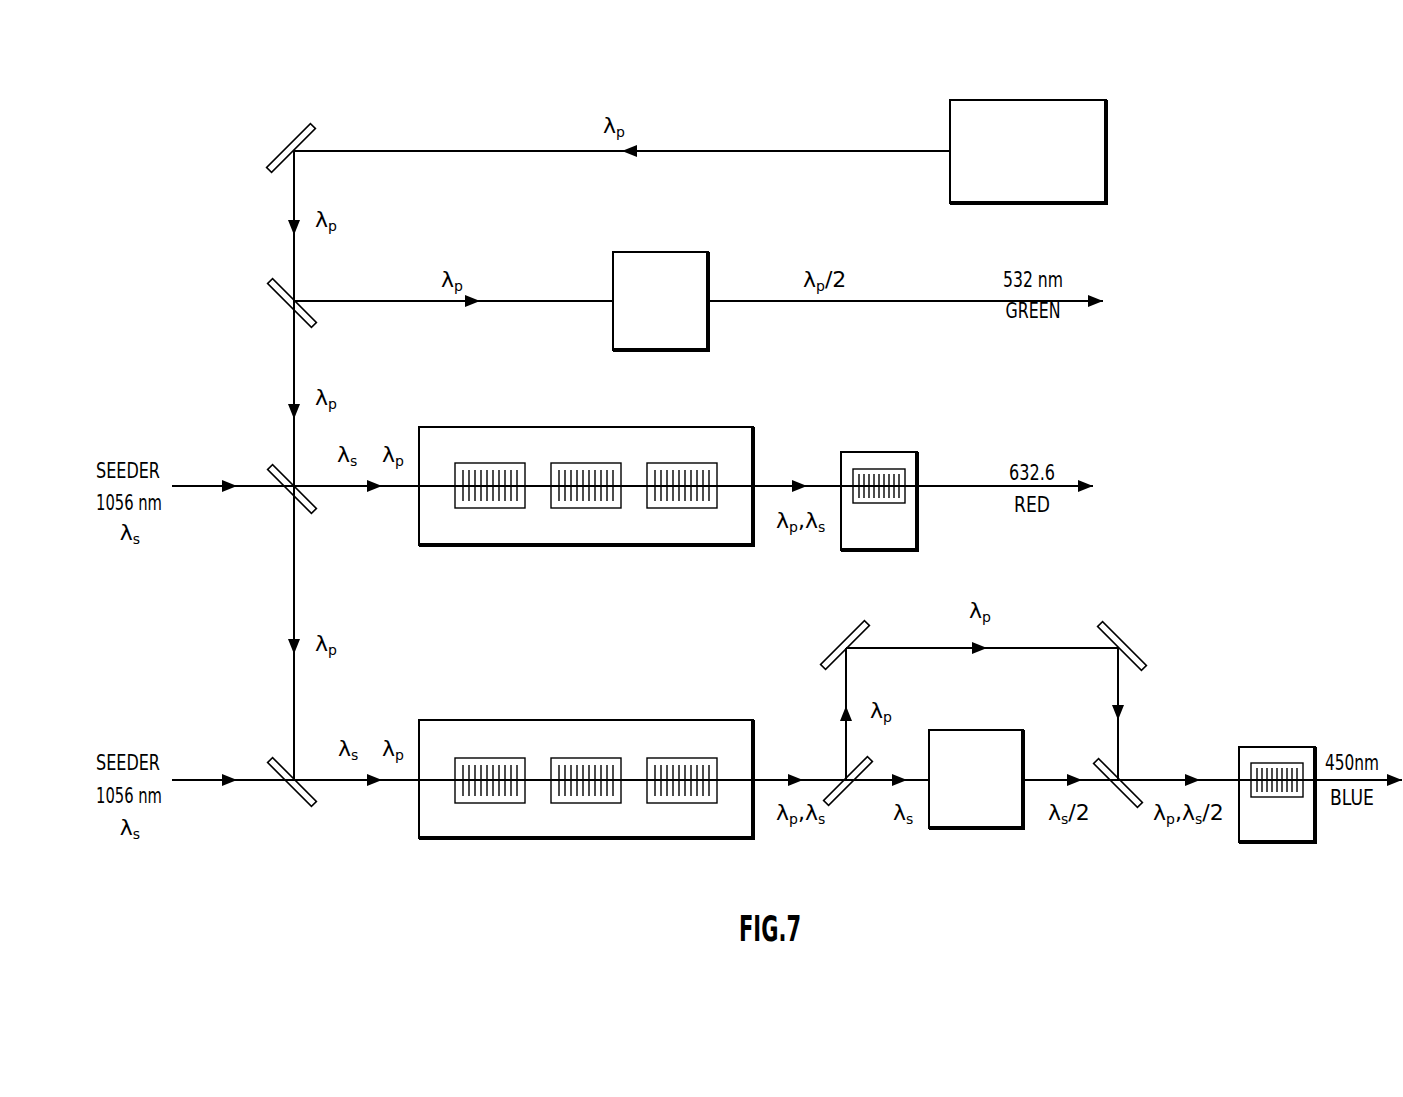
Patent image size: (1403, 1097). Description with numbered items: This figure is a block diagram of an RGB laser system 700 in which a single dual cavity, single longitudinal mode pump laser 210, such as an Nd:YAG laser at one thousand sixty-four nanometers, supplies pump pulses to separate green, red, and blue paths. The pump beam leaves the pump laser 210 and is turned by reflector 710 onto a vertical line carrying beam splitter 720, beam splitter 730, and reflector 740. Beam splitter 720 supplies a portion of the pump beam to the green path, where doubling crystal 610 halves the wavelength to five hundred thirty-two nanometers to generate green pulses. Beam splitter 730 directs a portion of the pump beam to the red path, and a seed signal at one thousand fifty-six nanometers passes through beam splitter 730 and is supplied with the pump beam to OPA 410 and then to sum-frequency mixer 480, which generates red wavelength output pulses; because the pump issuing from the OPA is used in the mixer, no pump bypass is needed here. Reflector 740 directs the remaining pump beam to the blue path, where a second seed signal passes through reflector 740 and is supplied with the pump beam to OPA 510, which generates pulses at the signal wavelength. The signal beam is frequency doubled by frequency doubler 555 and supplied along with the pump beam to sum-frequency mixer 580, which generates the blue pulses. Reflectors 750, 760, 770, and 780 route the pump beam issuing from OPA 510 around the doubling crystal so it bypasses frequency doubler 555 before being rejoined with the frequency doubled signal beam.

The RGB laser system 700 is at (1188, 345).
The pump laser 210 is at (1062, 203).
The reflector 710 is at (280, 155).
The beam splitter 720 is at (285, 296).
The beam splitter 730 is at (288, 493).
The reflector 740 is at (292, 787).
The reflector 750 is at (857, 803).
The reflector 760 is at (830, 650).
The reflector 770 is at (1125, 645).
The reflector 780 is at (1117, 809).
The doubling crystal 610 is at (661, 252).
The frequency doubler 555 is at (975, 730).
The optical parametric amplifier 410 is at (676, 427).
The optical parametric amplifier 510 is at (676, 720).
The sum-frequency mixer 480 is at (852, 452).
The sum-frequency mixer 580 is at (1248, 747).